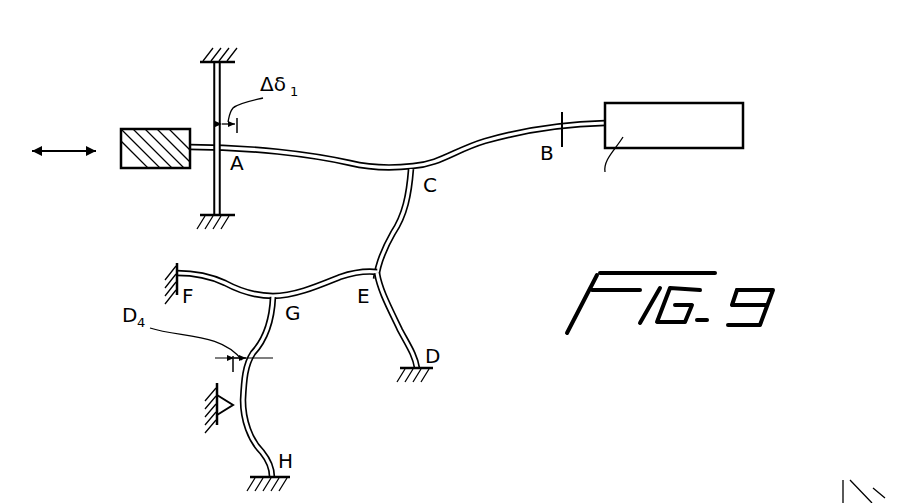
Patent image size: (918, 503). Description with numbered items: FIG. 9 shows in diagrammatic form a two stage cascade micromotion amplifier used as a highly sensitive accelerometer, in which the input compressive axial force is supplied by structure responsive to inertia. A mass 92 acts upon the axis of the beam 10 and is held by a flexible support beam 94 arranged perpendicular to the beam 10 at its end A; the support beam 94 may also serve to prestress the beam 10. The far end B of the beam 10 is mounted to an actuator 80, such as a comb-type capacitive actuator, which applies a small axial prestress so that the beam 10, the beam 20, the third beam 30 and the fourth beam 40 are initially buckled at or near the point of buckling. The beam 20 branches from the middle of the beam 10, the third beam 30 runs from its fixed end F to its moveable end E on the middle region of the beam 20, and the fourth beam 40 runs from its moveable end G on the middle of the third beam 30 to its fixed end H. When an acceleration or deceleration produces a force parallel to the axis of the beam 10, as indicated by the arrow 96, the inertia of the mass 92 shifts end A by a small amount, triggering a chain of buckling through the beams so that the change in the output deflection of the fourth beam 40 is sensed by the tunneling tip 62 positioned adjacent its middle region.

The beam 10 is at (345, 156).
The beam 20 is at (409, 214).
The third beam 30 is at (322, 275).
The fourth beam 40 is at (250, 373).
The tunneling tip 62 is at (232, 393).
The actuator 80 is at (743, 117).
The mass 92 is at (140, 128).
The flexible support beam 94 is at (211, 195).
The arrow 96 is at (64, 134).